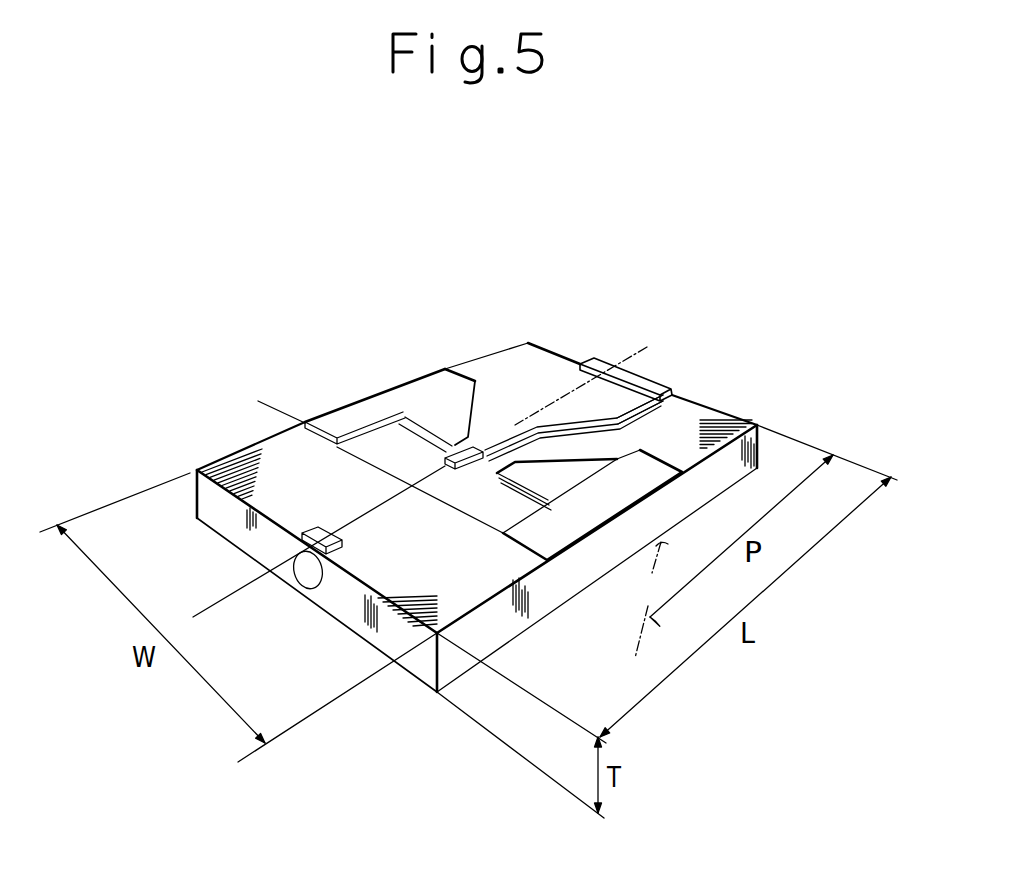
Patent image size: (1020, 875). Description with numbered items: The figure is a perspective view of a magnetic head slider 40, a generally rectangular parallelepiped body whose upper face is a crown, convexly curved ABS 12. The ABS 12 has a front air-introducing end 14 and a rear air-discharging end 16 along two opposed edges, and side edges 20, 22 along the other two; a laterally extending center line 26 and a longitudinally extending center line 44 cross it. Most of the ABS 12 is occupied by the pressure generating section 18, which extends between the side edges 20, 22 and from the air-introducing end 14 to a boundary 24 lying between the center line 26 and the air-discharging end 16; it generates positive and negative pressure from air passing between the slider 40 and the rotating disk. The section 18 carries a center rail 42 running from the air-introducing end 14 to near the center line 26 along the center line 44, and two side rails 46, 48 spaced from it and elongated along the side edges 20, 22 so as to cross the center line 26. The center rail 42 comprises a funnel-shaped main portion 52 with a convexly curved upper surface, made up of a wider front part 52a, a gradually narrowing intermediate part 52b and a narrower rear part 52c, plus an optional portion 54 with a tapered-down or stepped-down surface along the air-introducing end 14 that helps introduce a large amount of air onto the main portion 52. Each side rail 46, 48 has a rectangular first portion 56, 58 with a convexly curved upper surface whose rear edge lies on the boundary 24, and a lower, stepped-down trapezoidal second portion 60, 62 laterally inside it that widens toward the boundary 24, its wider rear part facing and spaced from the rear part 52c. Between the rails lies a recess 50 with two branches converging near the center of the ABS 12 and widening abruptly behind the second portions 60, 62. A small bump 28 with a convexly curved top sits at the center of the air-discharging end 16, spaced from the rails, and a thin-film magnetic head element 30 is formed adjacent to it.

The ABS 12 is at (487, 383).
The front air-introducing end 14 is at (732, 418).
The rear air-discharging end 16 is at (382, 584).
The pressure generating section 18 is at (646, 452).
The side edge 20 is at (274, 443).
The side edge 22 is at (528, 566).
The boundary 24 is at (625, 646).
The laterally extending center line 26 is at (430, 541).
The bump 28 is at (310, 532).
The thin-film magnetic head element 30 is at (303, 575).
The magnetic head slider 40 is at (549, 381).
The center rail 42 is at (570, 378).
The longitudinally extending center line 44 is at (651, 343).
The side rail 46 is at (418, 390).
The side rail 48 is at (660, 468).
The recess 50 is at (335, 437).
The main portion 52 is at (553, 393).
The front part 52a is at (640, 373).
The intermediate part 52b is at (640, 392).
The rear part 52c is at (515, 390).
The optional portion 54 is at (623, 363).
The first portion 56 is at (398, 395).
The first portion 58 is at (547, 522).
The second portion 60 is at (447, 407).
The second portion 62 is at (655, 477).